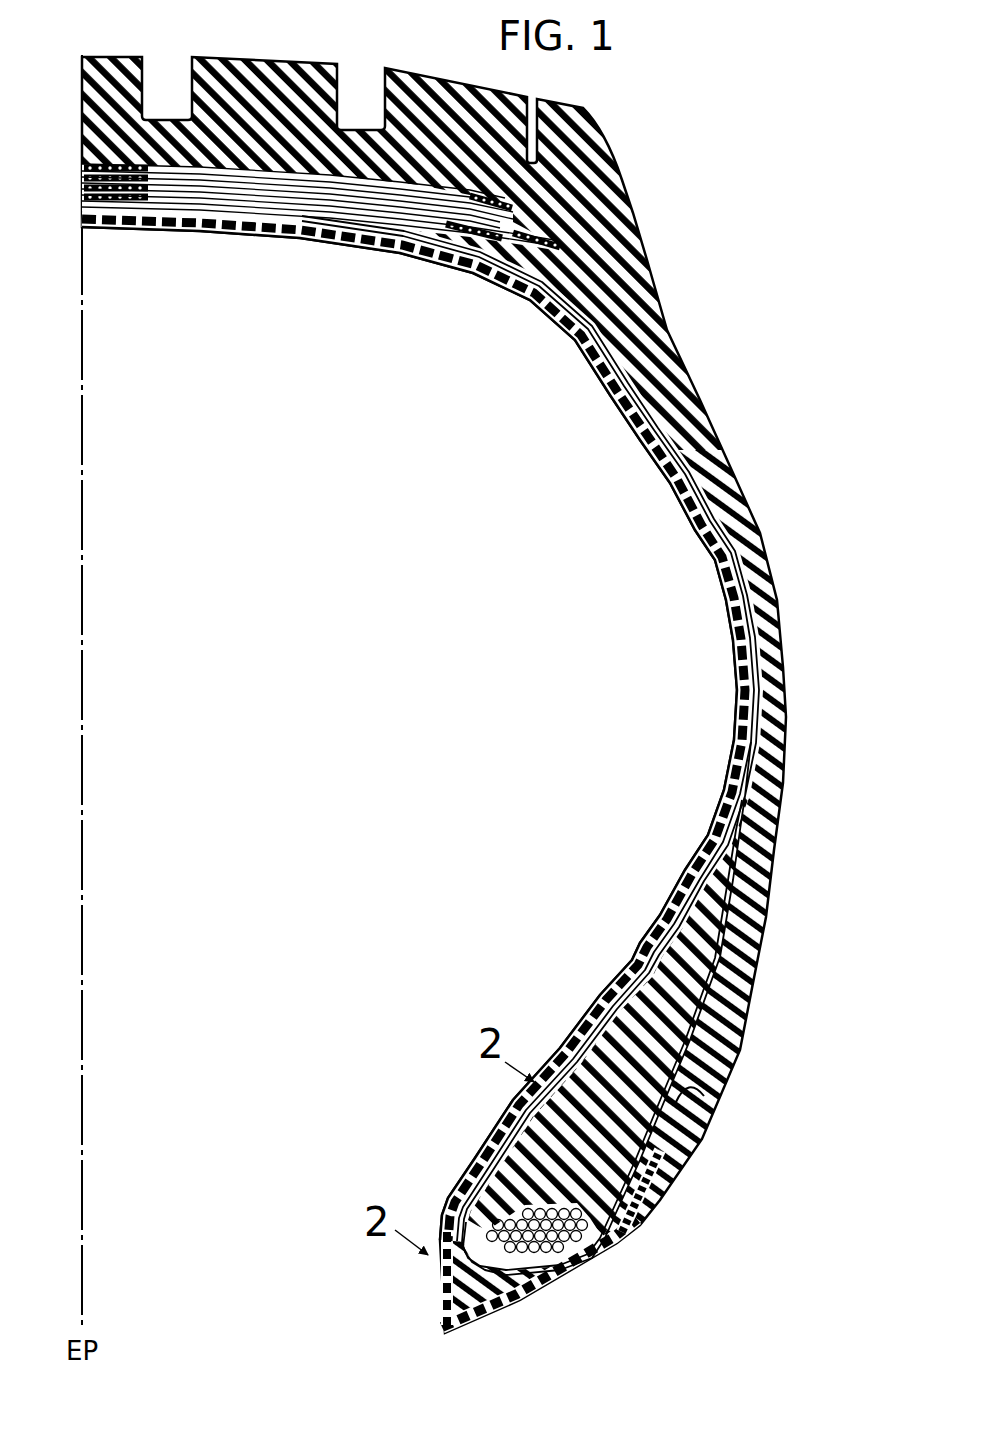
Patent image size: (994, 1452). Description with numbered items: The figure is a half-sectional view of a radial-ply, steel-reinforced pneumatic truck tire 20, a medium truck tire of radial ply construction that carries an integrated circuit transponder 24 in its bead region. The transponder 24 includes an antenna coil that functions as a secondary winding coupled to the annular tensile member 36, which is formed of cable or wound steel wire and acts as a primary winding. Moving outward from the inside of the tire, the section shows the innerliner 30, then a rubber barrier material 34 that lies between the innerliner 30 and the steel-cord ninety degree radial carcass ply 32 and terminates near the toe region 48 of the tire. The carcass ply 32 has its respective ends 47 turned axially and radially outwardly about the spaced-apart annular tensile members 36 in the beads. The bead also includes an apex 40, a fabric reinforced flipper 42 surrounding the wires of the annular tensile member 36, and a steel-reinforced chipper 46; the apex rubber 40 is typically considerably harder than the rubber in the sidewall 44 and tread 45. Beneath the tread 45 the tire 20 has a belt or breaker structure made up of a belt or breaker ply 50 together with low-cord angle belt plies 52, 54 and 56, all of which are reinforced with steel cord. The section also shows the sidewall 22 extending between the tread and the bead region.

The pneumatic truck tire 20 is at (290, 50).
The sidewall 22 is at (618, 197).
The integrated circuit transponder 24 is at (470, 1155).
The innerliner 30 is at (473, 273).
The radial carcass ply 32 is at (547, 320).
The rubber barrier material 34 is at (667, 423).
The annular tensile member 36 is at (540, 1257).
The apex 40 is at (700, 1015).
The fabric reinforced flipper 42 is at (617, 1253).
The sidewall 44 is at (767, 847).
The tread 45 is at (447, 90).
The steel-reinforced chipper 46 is at (656, 1216).
The carcass ply ends 47 is at (690, 1092).
The toe region 48 is at (520, 1300).
The belt ply 50 is at (303, 200).
The low-cord angle belt ply 52 is at (277, 190).
The low-cord angle belt ply 54 is at (238, 178).
The low-cord angle belt ply 56 is at (202, 168).